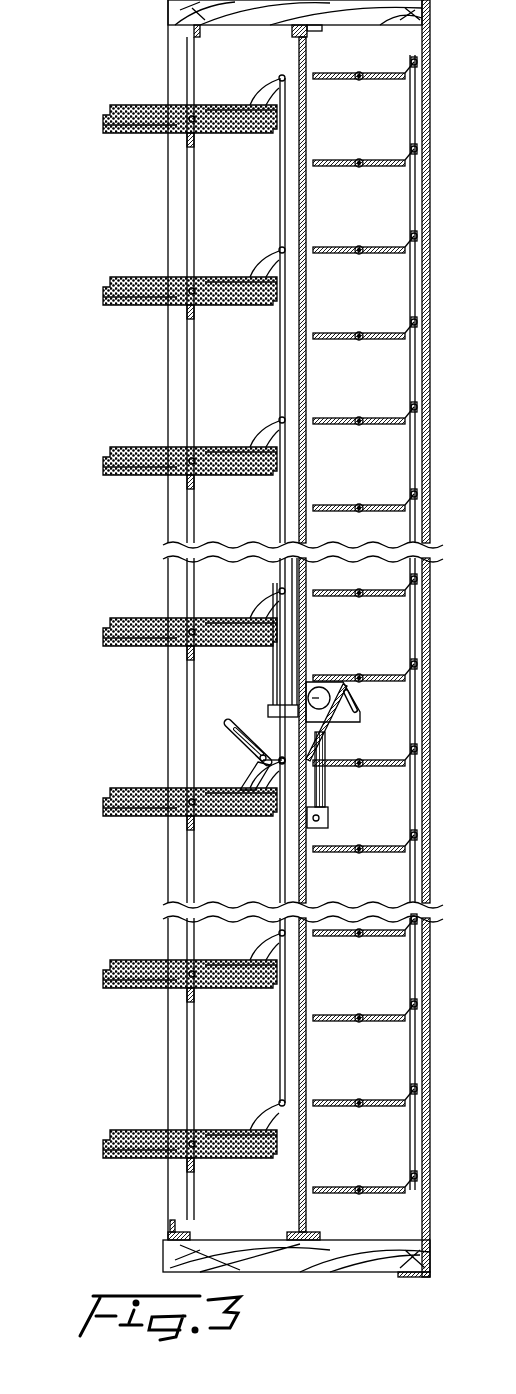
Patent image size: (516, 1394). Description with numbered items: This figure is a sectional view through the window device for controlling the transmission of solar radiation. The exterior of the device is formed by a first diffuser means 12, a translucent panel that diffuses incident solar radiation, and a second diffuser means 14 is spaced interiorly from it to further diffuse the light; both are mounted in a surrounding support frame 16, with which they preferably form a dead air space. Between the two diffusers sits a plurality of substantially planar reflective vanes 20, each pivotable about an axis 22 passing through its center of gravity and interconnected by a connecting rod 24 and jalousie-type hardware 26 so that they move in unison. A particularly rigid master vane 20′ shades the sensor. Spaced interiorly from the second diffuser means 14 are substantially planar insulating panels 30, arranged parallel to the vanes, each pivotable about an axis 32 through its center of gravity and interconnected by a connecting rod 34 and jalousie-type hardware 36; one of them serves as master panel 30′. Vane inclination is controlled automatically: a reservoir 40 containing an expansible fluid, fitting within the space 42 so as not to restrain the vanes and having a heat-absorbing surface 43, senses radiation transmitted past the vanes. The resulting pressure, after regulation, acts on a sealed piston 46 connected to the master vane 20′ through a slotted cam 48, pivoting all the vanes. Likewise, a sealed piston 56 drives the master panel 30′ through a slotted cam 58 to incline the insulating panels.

The first diffuser means 12 is at (427, 53).
The second diffuser means 14 is at (305, 128).
The support frame 16 is at (172, 10).
The reflective vanes 20 is at (387, 253).
The master vane 20′ is at (397, 682).
The axis 22 is at (363, 168).
The connecting rod 24 is at (414, 132).
The jalousie-type hardware 26 is at (388, 418).
The insulating panels 30 is at (123, 112).
The master panel 30′ is at (110, 800).
The axis 32 is at (192, 292).
The connecting rod 34 is at (282, 160).
The jalousie-type hardware 36 is at (280, 77).
The reservoir 40 is at (300, 703).
The space 42 is at (347, 692).
The optional surface 43 is at (320, 786).
The sealed piston 46 is at (360, 766).
The slotted cam 48 is at (360, 715).
The sealed piston 56 is at (275, 676).
The slotted cam 58 is at (230, 740).